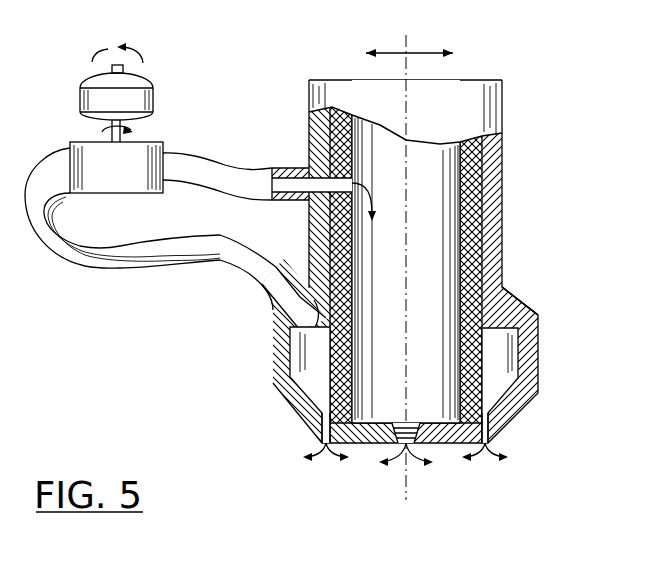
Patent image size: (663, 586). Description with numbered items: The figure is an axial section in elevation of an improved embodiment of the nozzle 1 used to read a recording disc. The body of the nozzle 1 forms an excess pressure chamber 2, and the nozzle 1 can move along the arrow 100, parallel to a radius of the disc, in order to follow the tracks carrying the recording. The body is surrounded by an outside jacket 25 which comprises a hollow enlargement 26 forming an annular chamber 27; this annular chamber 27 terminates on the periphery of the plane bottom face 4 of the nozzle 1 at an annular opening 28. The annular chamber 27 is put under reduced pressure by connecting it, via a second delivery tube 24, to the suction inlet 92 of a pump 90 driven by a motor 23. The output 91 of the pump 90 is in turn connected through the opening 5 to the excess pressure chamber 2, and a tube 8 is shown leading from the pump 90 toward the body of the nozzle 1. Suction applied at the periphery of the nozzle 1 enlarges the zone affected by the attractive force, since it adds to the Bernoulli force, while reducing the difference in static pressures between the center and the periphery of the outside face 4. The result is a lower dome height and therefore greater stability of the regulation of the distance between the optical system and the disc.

The nozzle 1 is at (508, 240).
The excess pressure chamber 2 is at (434, 255).
The plane bottom face 4 is at (462, 446).
The opening 5 is at (408, 423).
The inlet tube 8 is at (248, 165).
The motor 23 is at (153, 96).
The second delivery tube 24 is at (130, 270).
The outside jacket 25 is at (515, 293).
The hollow enlargement 26 is at (542, 353).
The annular chamber 27 is at (292, 375).
The annular opening 28 is at (322, 445).
The pump 90 is at (118, 194).
The output 91 is at (163, 152).
The suction inlet 92 is at (70, 152).
The arrow 100 is at (409, 53).